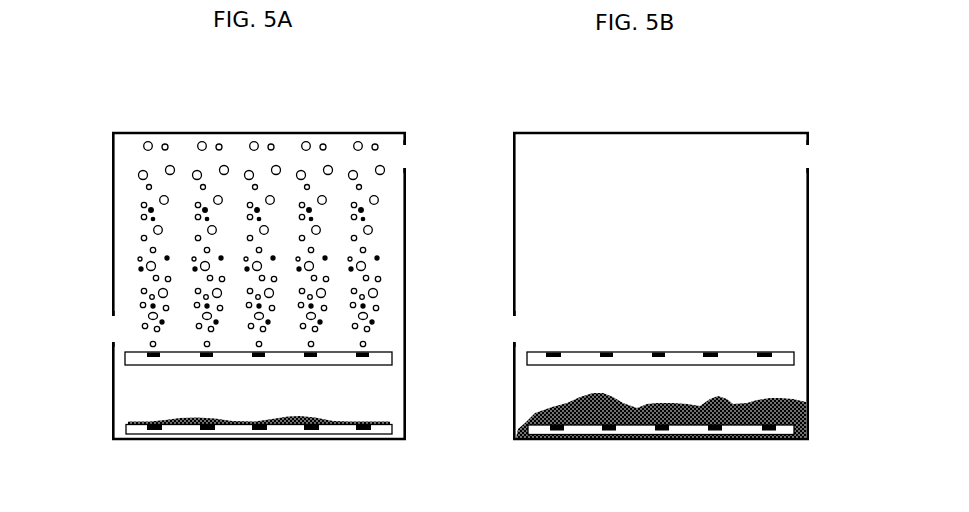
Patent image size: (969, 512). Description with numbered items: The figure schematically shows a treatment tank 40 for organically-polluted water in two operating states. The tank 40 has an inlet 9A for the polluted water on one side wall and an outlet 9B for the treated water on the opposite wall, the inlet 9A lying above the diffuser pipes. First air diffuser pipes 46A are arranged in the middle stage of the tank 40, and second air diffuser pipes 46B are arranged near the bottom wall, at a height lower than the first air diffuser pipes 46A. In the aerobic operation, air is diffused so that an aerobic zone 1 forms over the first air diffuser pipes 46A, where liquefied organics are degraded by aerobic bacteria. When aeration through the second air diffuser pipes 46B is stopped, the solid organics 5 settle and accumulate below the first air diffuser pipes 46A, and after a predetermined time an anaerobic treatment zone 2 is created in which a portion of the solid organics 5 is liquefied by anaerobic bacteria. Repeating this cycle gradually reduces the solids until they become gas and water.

In FIG. 5A, the treatment tank 40 is at (100, 203).
In FIG. 5A, the aerobic zone 1 is at (246, 294).
In FIG. 5B, the anaerobic treatment zone 2 is at (652, 294).
In FIG. 5A, the inlet 9A is at (112, 332).
In FIG. 5B, the inlet 9A is at (518, 328).
In FIG. 5A, the outlet 9B is at (400, 163).
In FIG. 5B, the outlet 9B is at (808, 157).
In FIG. 5A, the first air diffuser pipes 46A is at (132, 356).
In FIG. 5B, the first air diffuser pipes 46A is at (543, 356).
In FIG. 5A, the second air diffuser pipes 46B is at (223, 433).
In FIG. 5B, the second air diffuser pipes 46B is at (634, 433).
In FIG. 5B, the solid organics 5 is at (805, 403).